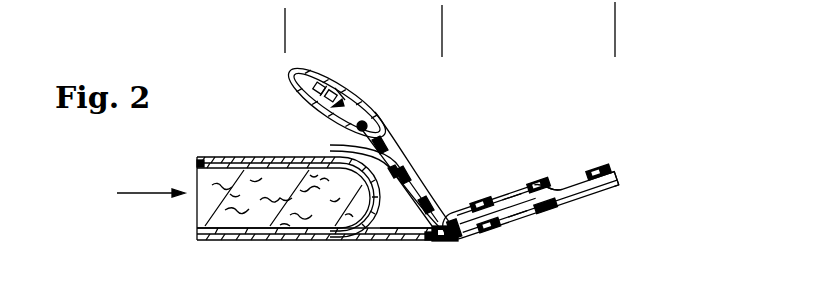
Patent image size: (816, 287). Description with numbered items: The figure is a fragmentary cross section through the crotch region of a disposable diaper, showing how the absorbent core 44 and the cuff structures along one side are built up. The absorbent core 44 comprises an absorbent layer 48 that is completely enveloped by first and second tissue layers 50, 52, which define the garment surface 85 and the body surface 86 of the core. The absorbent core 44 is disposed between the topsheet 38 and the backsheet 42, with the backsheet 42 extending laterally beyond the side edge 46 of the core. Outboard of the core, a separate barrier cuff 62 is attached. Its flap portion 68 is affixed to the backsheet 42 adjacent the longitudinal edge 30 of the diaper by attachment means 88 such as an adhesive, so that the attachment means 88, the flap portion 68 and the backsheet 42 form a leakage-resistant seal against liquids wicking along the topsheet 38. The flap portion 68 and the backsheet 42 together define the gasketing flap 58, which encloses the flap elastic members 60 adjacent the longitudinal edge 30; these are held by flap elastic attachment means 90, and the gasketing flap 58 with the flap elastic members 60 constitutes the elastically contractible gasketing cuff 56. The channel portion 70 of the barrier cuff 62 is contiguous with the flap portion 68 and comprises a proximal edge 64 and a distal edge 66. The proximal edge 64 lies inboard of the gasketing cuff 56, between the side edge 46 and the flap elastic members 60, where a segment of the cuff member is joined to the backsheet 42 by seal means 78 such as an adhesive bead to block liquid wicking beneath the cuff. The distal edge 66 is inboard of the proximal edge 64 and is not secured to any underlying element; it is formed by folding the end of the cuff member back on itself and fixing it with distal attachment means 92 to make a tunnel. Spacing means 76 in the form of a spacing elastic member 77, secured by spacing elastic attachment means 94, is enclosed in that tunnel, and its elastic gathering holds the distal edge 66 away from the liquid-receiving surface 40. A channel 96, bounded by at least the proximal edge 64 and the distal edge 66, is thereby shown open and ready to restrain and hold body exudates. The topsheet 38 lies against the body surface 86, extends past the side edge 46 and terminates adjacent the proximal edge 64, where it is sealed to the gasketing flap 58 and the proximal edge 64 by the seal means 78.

The longitudinal edge 30 is at (612, 170).
The topsheet 38 is at (205, 157).
The liquid-receiving surface 40 is at (240, 157).
The backsheet 42 is at (215, 241).
The absorbent core 44 is at (136, 190).
The side edge 46 is at (388, 234).
The absorbent layer 48 is at (200, 216).
The first tissue layer 50 is at (197, 164).
The second tissue layer 52 is at (300, 240).
The gasketing cuff 56 is at (537, 157).
The gasketing flap 58 is at (510, 200).
The flap elastic members 60 is at (526, 203).
The barrier cuff 62 is at (443, 142).
The proximal edge 64 is at (445, 225).
The distal edge 66 is at (292, 80).
The flap portion 68 is at (615, 19).
The channel portion 70 is at (442, 19).
The spacing means 76 is at (340, 94).
The spacing elastic member 77 is at (338, 102).
The seal means 78 is at (437, 241).
The garment surface 85 is at (260, 240).
The body surface 86 is at (288, 160).
The attachment means 88 is at (599, 170).
The flap elastic attachment means 90 is at (533, 183).
The distal attachment means 92 is at (368, 126).
The spacing elastic attachment means 94 is at (325, 82).
The channel 96 is at (375, 158).